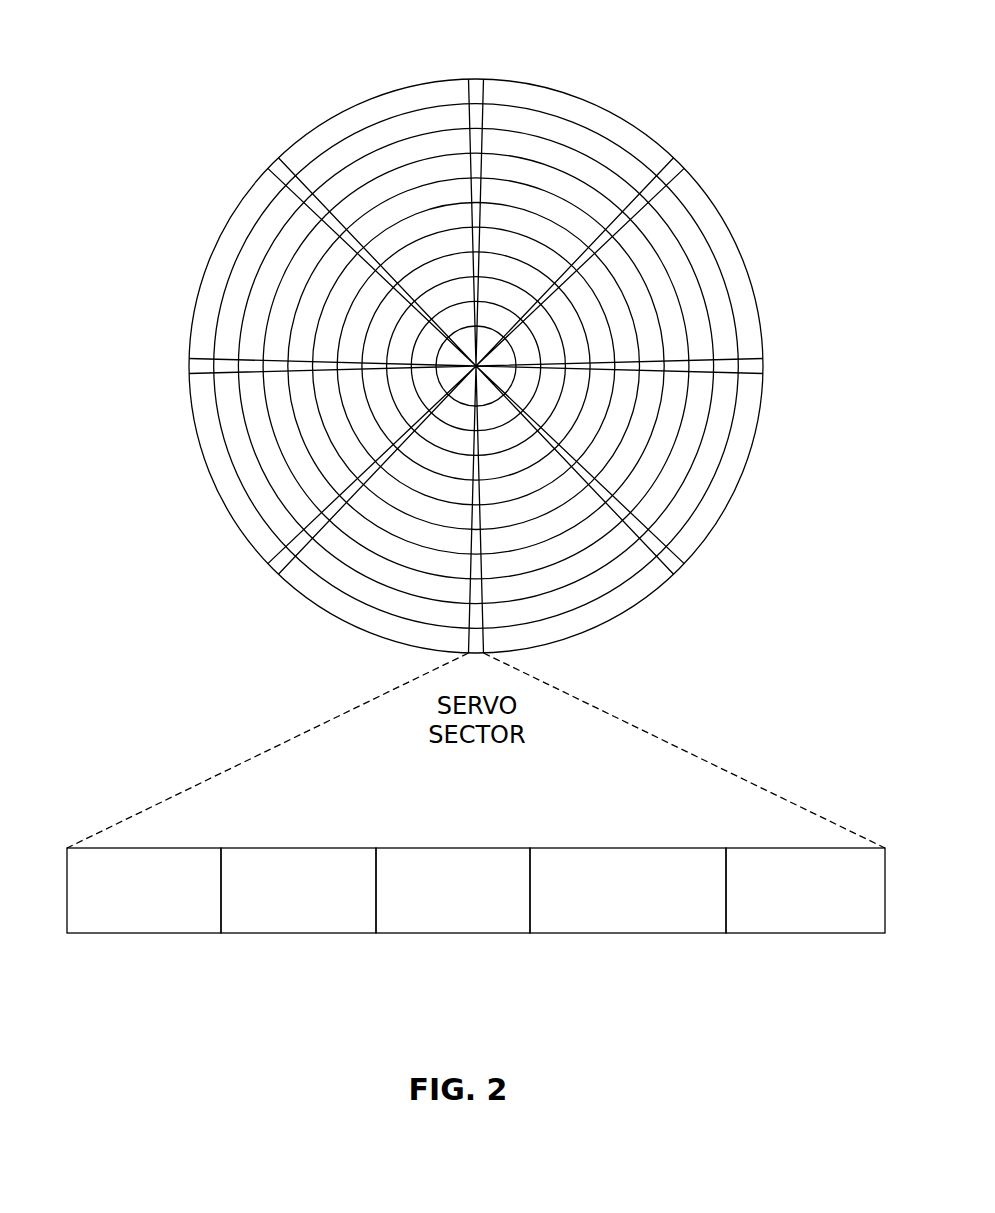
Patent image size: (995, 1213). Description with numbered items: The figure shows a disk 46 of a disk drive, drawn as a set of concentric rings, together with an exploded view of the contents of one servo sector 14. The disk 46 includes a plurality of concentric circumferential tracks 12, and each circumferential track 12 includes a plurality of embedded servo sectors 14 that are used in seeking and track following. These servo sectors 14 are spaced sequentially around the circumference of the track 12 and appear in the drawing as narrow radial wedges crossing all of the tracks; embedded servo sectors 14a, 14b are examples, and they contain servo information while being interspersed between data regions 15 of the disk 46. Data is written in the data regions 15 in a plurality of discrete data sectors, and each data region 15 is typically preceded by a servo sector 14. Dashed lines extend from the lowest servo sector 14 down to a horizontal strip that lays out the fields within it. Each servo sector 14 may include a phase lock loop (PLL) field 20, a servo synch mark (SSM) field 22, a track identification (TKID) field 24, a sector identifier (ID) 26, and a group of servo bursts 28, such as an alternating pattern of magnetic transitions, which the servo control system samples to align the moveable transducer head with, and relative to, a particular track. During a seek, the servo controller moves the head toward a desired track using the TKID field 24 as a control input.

The disk 46 is at (470, 371).
The circumferential track 12 is at (236, 252).
The servo sector 14 is at (480, 84).
The embedded servo sector 14a is at (280, 168).
The embedded servo sector 14b is at (198, 366).
The data region 15 is at (548, 128).
The phase lock loop (PLL) field 20 is at (87, 934).
The servo synch mark (SSM) field 22 is at (240, 934).
The track identification (TKID) field 24 is at (395, 934).
The sector identifier (ID) 26 is at (553, 934).
The servo bursts 28 is at (751, 934).